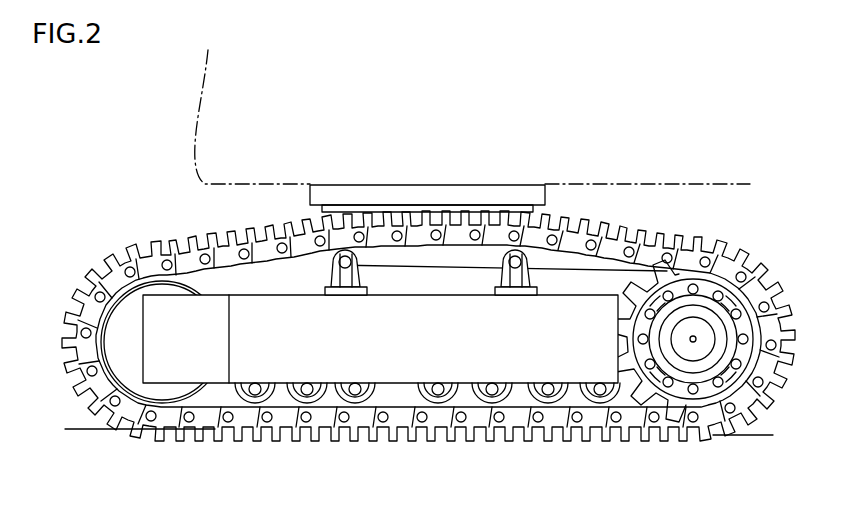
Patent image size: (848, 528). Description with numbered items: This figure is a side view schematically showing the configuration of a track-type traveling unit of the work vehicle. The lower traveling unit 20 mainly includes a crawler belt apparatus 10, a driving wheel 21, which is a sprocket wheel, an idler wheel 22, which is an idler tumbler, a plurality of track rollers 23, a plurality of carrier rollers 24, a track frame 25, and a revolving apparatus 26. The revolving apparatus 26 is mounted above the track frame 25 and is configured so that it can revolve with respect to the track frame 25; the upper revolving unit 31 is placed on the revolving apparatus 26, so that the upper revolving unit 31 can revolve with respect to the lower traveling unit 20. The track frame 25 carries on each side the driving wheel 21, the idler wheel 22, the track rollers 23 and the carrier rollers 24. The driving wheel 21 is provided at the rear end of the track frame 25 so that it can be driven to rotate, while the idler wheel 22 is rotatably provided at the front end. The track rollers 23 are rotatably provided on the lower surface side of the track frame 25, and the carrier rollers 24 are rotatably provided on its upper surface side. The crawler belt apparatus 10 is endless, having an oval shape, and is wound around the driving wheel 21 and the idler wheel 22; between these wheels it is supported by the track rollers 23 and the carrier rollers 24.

The crawler belt apparatus 10 is at (465, 199).
The lower traveling unit 20 is at (333, 181).
The driving wheel 21 is at (707, 301).
The idler wheel 22 is at (123, 331).
The track roller 23 is at (255, 394).
The carrier roller 24 is at (331, 263).
The track frame 25 is at (566, 280).
The revolving apparatus 26 is at (526, 197).
The upper revolving unit 31 is at (203, 77).